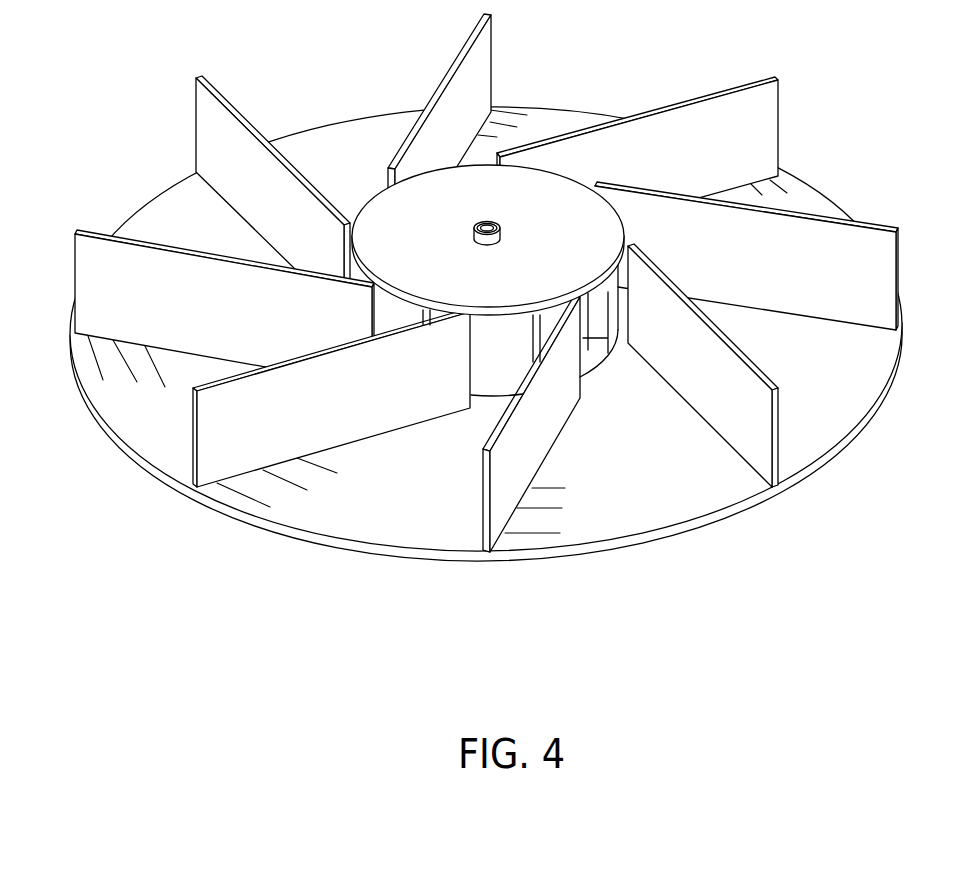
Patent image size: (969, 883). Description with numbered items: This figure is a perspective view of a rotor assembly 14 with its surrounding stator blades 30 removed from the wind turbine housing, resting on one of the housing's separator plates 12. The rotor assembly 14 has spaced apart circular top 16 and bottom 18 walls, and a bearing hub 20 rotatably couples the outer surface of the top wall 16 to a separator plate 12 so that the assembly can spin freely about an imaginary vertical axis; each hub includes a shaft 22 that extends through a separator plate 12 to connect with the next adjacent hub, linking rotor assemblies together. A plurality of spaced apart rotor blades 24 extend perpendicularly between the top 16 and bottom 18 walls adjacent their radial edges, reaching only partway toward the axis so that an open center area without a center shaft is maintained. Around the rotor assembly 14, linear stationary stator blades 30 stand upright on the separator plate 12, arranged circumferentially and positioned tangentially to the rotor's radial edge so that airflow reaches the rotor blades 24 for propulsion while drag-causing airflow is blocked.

The separator plate 12 is at (150, 437).
The rotor assembly 14 is at (609, 373).
The top wall 16 is at (421, 242).
The bottom wall 18 is at (515, 381).
The bearing hub 20 is at (502, 233).
The shaft 22 is at (486, 222).
The rotor blade 24 is at (597, 305).
The stator blade 30 is at (272, 446).